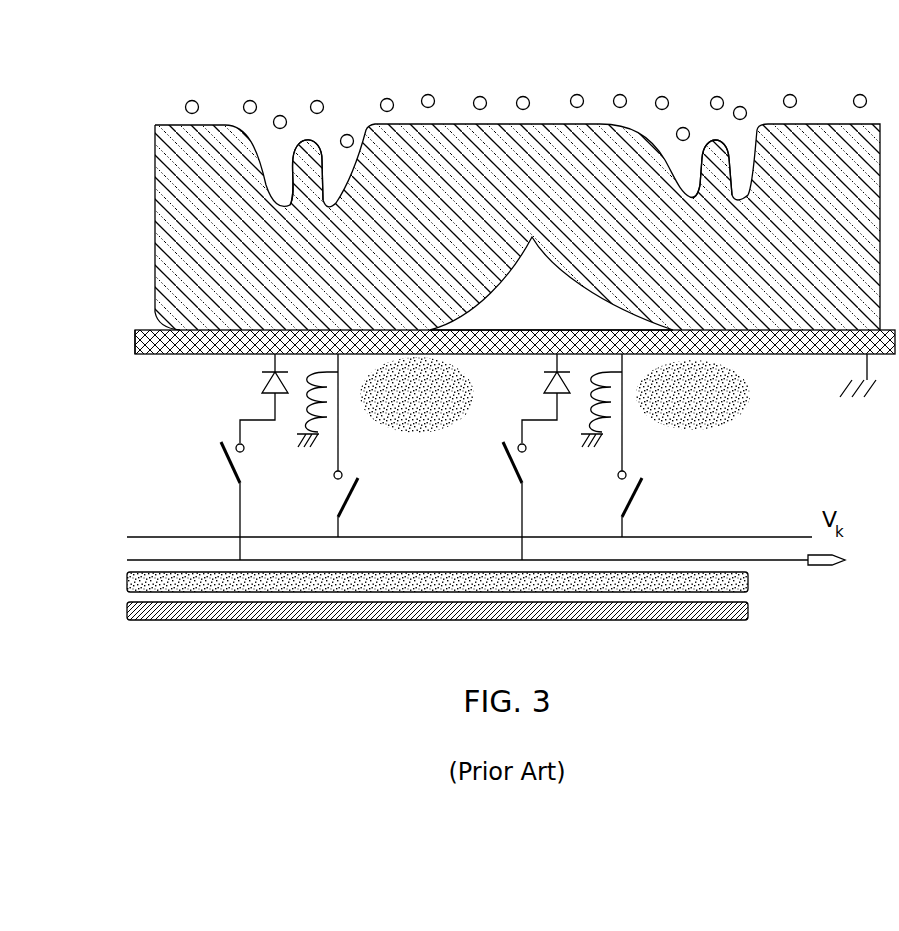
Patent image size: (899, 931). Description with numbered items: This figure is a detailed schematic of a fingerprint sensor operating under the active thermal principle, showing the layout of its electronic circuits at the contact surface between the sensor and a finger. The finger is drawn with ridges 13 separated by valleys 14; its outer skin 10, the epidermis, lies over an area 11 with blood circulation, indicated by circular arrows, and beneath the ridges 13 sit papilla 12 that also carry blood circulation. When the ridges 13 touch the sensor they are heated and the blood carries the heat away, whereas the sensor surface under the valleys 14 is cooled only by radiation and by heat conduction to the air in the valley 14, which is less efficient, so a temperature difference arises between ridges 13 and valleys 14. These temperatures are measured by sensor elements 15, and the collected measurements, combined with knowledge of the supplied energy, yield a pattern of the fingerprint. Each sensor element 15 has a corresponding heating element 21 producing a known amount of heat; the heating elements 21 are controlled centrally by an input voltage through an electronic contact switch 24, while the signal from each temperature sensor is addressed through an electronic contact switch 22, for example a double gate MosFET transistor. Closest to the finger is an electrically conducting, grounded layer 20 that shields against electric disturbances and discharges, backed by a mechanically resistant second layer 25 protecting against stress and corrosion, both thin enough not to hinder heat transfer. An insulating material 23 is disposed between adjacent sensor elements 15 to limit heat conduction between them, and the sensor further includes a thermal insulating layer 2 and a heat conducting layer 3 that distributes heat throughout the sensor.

The thermal insulating layer 2 is at (752, 578).
The heat conducting layer 3 is at (752, 608).
The outer skin 10 is at (182, 289).
The area with blood circulation 11 is at (165, 103).
The papilla 12 is at (343, 170).
The ridges 13 is at (313, 298).
The valleys 14 is at (520, 268).
The sensor elements 15 is at (268, 372).
The grounded layer 20 is at (763, 355).
The heating element 21 is at (300, 428).
The electronic contact switch 22 is at (228, 464).
The insulating material 23 is at (432, 410).
The electronic contact switch 24 is at (360, 495).
The second layer 25 is at (136, 344).